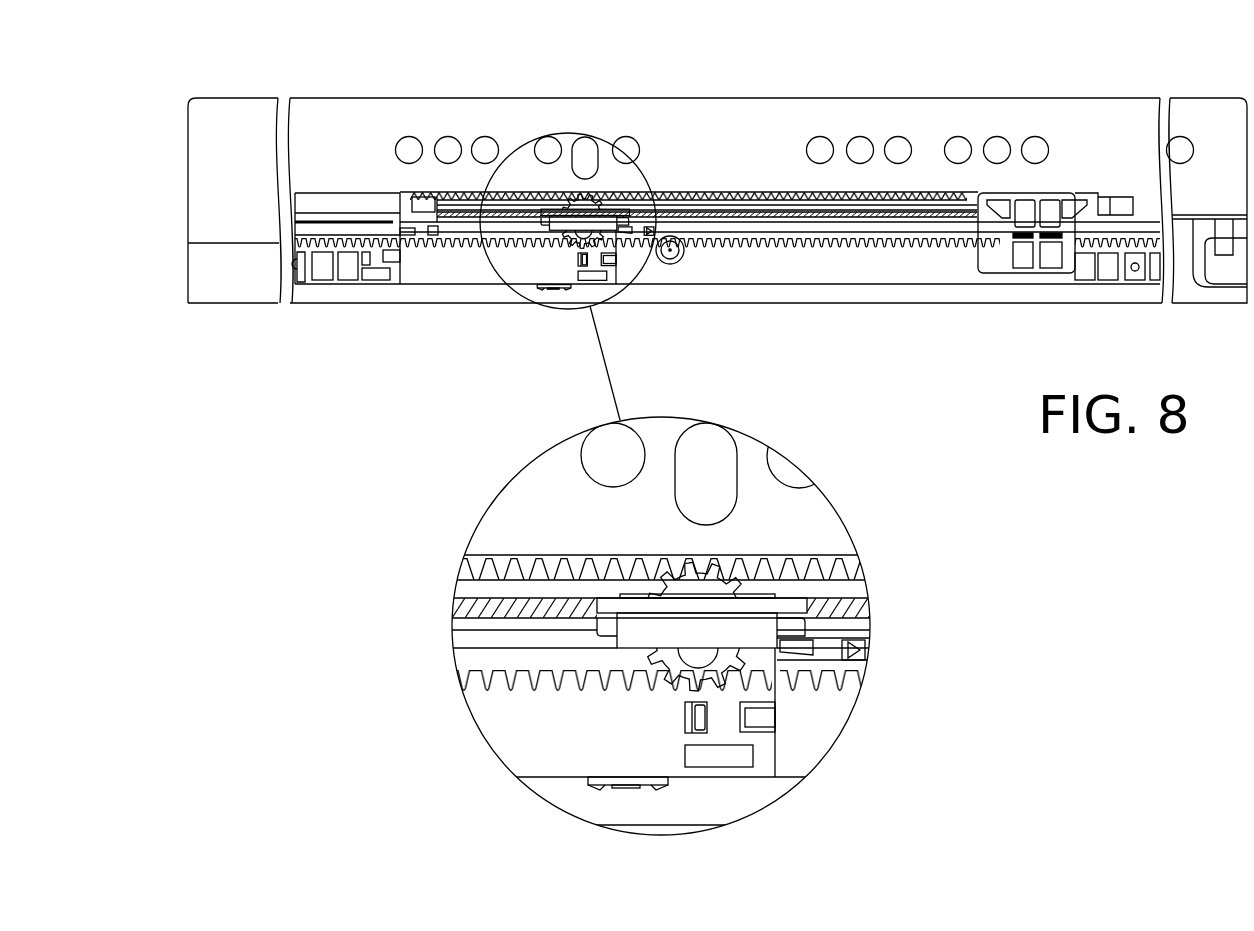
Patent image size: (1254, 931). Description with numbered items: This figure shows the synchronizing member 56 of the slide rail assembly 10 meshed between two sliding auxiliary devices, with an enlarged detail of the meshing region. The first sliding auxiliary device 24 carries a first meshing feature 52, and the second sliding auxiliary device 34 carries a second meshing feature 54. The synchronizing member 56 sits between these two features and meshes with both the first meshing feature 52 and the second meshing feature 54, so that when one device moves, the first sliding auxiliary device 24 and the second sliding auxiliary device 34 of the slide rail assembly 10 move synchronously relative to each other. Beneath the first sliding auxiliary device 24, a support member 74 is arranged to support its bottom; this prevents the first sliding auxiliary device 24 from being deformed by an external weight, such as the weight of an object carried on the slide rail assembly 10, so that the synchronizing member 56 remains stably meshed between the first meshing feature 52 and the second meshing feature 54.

The slide rail assembly 10 is at (350, 84).
The first sliding auxiliary device 24 is at (532, 709).
The second sliding auxiliary device 34 is at (570, 517).
The first meshing feature 52 is at (708, 690).
The second meshing feature 54 is at (708, 562).
The synchronizing member 56 is at (718, 585).
The support member 74 is at (663, 787).